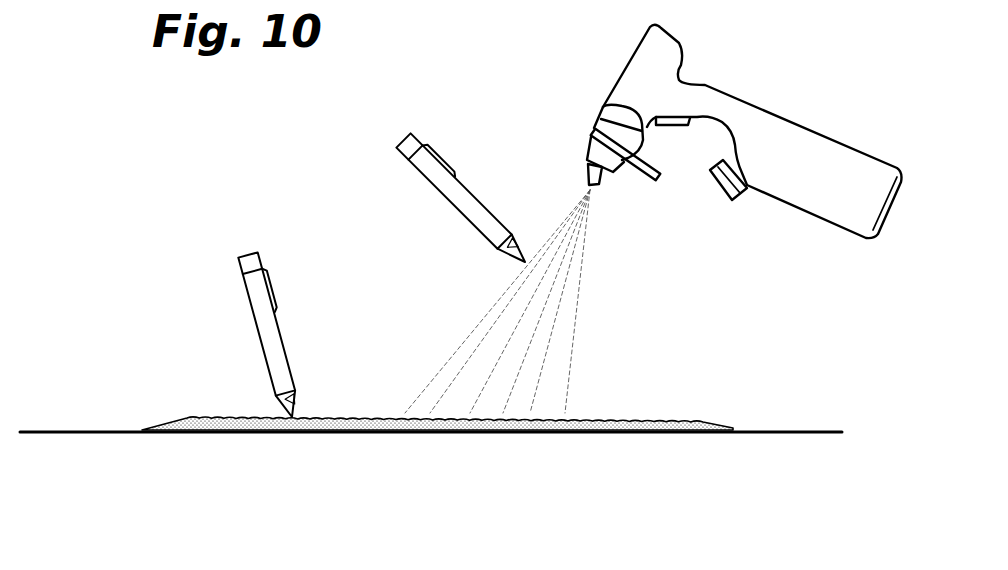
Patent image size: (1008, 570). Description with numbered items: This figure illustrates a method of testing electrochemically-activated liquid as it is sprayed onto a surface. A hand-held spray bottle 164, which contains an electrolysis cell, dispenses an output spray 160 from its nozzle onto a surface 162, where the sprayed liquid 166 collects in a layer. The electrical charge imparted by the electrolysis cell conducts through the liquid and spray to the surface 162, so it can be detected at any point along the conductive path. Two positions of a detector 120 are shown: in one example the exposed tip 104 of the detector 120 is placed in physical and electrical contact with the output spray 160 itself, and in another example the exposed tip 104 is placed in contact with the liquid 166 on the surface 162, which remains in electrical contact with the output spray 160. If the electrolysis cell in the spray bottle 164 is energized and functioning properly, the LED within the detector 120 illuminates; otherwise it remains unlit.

The exposed tip 104 is at (297, 416).
The detector 120 is at (248, 302).
The output spray 160 is at (600, 288).
The surface 162 is at (768, 433).
The hand-held spray bottle 164 is at (783, 116).
The liquid 166 is at (184, 417).